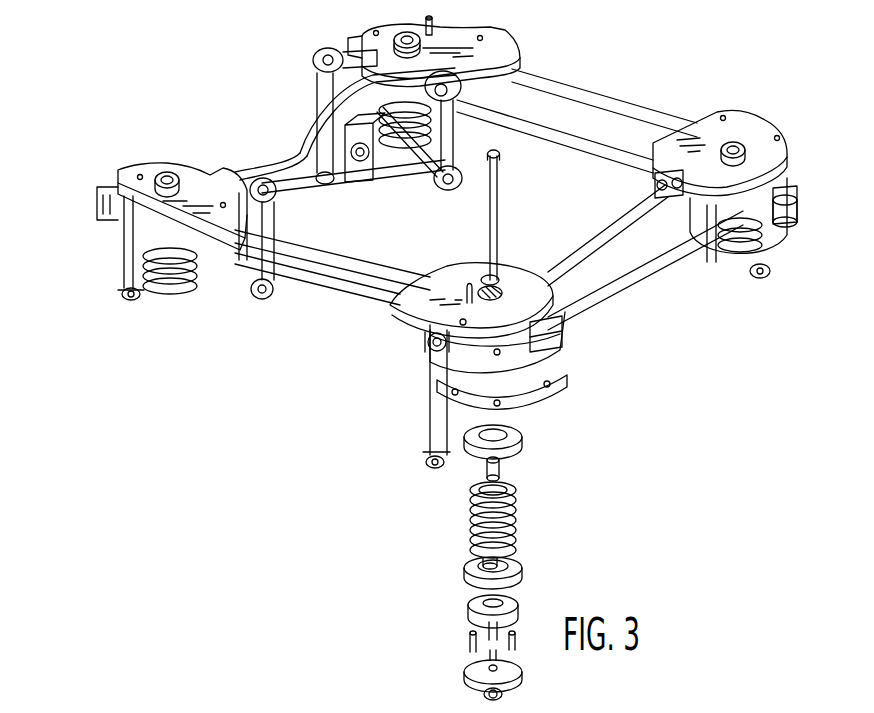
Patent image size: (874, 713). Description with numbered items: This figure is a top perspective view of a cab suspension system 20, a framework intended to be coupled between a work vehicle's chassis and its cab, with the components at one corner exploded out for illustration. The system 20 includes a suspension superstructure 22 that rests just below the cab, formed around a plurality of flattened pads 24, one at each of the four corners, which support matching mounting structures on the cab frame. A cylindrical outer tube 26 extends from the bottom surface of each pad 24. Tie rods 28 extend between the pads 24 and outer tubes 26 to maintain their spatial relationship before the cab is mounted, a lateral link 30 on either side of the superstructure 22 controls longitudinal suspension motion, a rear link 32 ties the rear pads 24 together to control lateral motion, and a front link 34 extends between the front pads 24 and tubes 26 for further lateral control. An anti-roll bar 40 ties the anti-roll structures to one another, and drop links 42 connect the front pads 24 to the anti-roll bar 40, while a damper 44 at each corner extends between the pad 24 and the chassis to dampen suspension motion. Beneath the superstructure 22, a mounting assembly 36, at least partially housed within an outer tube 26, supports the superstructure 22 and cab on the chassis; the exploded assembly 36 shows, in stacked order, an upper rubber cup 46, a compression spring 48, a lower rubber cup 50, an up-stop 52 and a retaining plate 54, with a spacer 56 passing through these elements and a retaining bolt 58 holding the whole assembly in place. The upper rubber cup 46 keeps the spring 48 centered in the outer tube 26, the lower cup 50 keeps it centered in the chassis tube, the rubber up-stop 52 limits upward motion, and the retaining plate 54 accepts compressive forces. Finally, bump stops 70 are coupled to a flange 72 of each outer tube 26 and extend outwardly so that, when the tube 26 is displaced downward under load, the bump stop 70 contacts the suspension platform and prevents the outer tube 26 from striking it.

The cab suspension system 20 is at (86, 124).
The suspension superstructure 22 is at (208, 128).
The pad 24 is at (218, 185).
The outer tube 26 is at (174, 285).
The tie rod 28 is at (589, 95).
The lateral link 30 is at (320, 250).
The rear link 32 is at (586, 242).
The front link 34 is at (292, 150).
The mounting assembly 36 is at (420, 578).
The anti-roll bar 40 is at (290, 205).
The drop link 42 is at (452, 132).
The damper 44 is at (312, 75).
The upper rubber cup 46 is at (520, 433).
The compression spring 48 is at (522, 520).
The lower rubber cup 50 is at (523, 565).
The up-stop 52 is at (520, 603).
The retaining plate 54 is at (460, 670).
The spacer 56 is at (484, 568).
The retaining bolt 58 is at (488, 220).
The bump stop 70 is at (105, 230).
The flange 72 is at (792, 205).